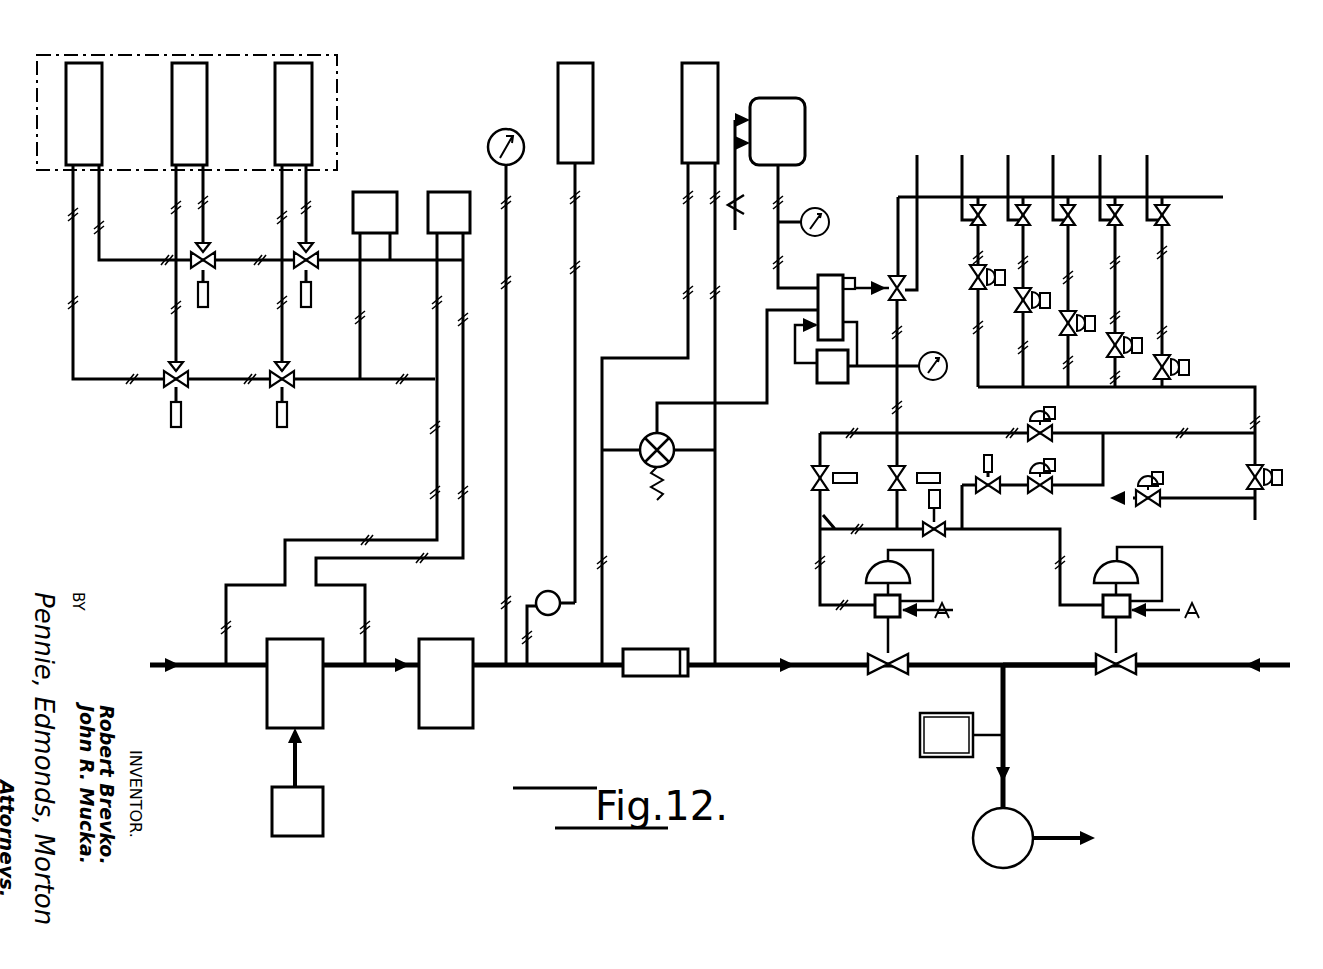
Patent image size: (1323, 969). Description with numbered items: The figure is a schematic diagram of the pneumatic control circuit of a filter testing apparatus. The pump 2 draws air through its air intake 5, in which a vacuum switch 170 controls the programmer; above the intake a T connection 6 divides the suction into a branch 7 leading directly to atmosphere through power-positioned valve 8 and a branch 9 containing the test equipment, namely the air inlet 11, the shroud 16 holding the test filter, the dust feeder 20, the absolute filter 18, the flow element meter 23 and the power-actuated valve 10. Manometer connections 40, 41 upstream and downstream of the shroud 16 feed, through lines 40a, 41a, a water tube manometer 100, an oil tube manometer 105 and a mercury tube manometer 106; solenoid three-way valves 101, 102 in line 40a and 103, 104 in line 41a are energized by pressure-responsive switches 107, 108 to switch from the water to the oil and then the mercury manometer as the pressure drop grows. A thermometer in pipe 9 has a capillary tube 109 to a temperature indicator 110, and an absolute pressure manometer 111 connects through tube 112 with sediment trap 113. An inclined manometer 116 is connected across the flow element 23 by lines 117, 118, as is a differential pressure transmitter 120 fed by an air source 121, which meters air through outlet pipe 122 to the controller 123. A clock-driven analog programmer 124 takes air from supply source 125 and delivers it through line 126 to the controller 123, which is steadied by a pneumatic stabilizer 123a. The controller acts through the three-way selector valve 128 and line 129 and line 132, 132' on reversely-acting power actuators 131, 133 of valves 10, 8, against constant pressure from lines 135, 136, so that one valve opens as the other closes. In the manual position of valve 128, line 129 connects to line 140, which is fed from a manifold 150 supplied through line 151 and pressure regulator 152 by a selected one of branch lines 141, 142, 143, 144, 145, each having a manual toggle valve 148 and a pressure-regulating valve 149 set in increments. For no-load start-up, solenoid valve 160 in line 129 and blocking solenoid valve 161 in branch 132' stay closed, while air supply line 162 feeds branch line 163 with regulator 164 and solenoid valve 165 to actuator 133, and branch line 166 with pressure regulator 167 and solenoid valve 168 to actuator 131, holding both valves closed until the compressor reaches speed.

The pump 2 is at (1028, 818).
The air intake 5 is at (1007, 793).
The T connection 6 is at (1003, 657).
The branch 7 is at (1046, 667).
The power-positioned valve 8 is at (1144, 628).
The branch 9 is at (808, 667).
The power-actuated valve 10 is at (916, 628).
The air inlet 11 is at (205, 660).
The shroud 16 is at (277, 695).
The absolute filter 18 is at (457, 705).
The dust feeder 20 is at (298, 810).
The flow element meter 23 is at (652, 667).
The manometer connection 40 is at (225, 603).
The line 40a is at (102, 382).
The manometer connection 41 is at (367, 602).
The line 41a is at (137, 263).
The water tube manometer 100 is at (93, 140).
The solenoid-actuated three-way valve 101 is at (165, 388).
The solenoid-actuated three-way valve 102 is at (295, 388).
The solenoid valve 103 is at (217, 253).
The solenoid valve 104 is at (310, 250).
The oil tube manometer 105 is at (195, 140).
The mercury tube manometer 106 is at (305, 133).
The pressure-responsive switch 107 is at (450, 203).
The pressure-responsive switch 108 is at (387, 203).
The capillary tube 109 is at (512, 340).
The temperature indicator 110 is at (503, 125).
The absolute pressure manometer 111 is at (583, 83).
The tube 112 is at (577, 280).
The sediment trap 113 is at (547, 592).
The inclined manometer 116 is at (708, 90).
The line 117 is at (688, 213).
The line 118 is at (713, 323).
The differential pressure transmitter 120 is at (677, 438).
The source of air pressure 121 is at (658, 488).
The outlet pipe 122 is at (768, 388).
The controller 123 is at (842, 270).
The pneumatic stabilizer 123a is at (840, 383).
The analog programmer 124 is at (806, 124).
The supply source 125 is at (730, 220).
The line 126 is at (775, 245).
The three-way valve 128 is at (905, 295).
The line 129 is at (907, 387).
The power actuator 131 is at (877, 617).
The line 132 is at (850, 525).
The branch of line 132 132' is at (1031, 545).
The power actuator 133 is at (1103, 615).
The line 135 is at (1168, 600).
The line 136 is at (958, 608).
The line 140 is at (940, 197).
The branch line 141 is at (1008, 233).
The branch line 142 is at (1037, 230).
The branch line 143 is at (1082, 240).
The branch line 144 is at (1137, 240).
The branch line 145 is at (1163, 307).
The manual toggle valve 148 is at (985, 230).
The pressure-regulating valve 149 is at (1185, 357).
The manifold 150 is at (1233, 385).
The line 151 is at (1253, 517).
The pressure regulator 152 is at (1270, 470).
The solenoid valve 160 is at (907, 463).
The blocking solenoid valve 161 is at (942, 537).
The air supply line 162 is at (1228, 427).
The branch line 163 is at (1103, 462).
The regulator 164 is at (1052, 490).
The solenoid valve 165 is at (995, 488).
The branch line 166 is at (1000, 417).
The pressure regulator 167 is at (1052, 428).
The solenoid valve 168 is at (813, 480).
The vacuum switch 170 is at (917, 755).